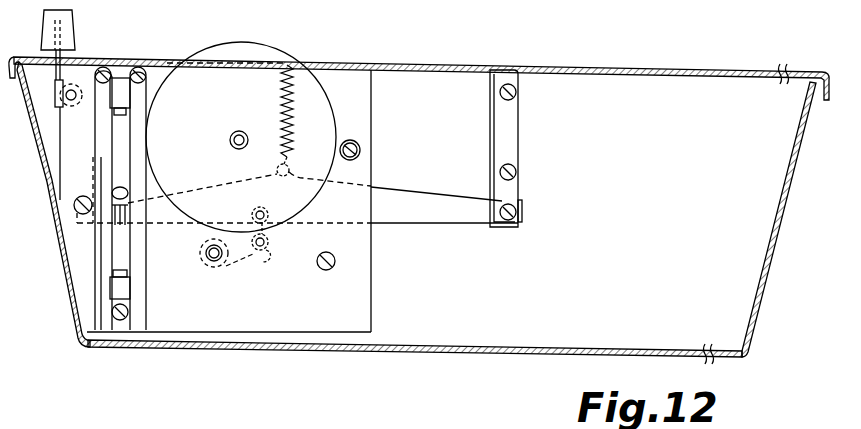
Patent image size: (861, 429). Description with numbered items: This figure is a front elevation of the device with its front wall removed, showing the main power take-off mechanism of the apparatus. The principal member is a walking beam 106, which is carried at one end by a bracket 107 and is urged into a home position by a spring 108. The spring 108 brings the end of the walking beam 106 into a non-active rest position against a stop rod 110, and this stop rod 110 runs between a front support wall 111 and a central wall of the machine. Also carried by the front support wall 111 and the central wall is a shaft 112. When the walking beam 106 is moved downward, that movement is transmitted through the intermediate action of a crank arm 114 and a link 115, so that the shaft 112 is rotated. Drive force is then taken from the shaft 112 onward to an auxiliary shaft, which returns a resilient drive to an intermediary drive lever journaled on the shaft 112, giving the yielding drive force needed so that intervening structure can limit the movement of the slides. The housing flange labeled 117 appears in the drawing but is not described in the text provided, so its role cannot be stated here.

The walking beam 106 is at (416, 218).
The bracket 107 is at (516, 128).
The spring 108 is at (277, 100).
The stop rod 110 is at (74, 206).
The front support wall 111 is at (372, 308).
The shaft 112 is at (218, 267).
The crank arm 114 is at (254, 266).
The link 115 is at (270, 244).
The housing flange 117 is at (459, 66).